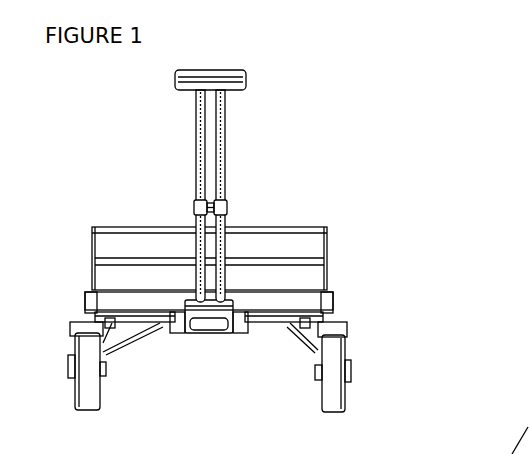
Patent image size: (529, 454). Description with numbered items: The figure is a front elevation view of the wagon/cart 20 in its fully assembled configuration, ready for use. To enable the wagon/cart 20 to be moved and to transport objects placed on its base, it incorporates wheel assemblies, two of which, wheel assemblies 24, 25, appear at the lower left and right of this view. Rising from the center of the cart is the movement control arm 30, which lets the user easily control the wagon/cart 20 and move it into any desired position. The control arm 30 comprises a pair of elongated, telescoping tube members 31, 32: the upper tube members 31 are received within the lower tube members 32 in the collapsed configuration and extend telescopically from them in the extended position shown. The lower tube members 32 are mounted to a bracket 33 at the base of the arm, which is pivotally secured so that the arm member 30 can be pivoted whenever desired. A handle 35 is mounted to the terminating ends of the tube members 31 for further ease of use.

The wagon/cart 20 is at (355, 220).
The wheel assembly 24 is at (335, 398).
The wheel assembly 25 is at (87, 390).
The movement control arm 30 is at (225, 145).
The tube member 31 is at (200, 162).
The tube member 32 is at (200, 242).
The bracket 33 is at (222, 335).
The handle 35 is at (227, 70).